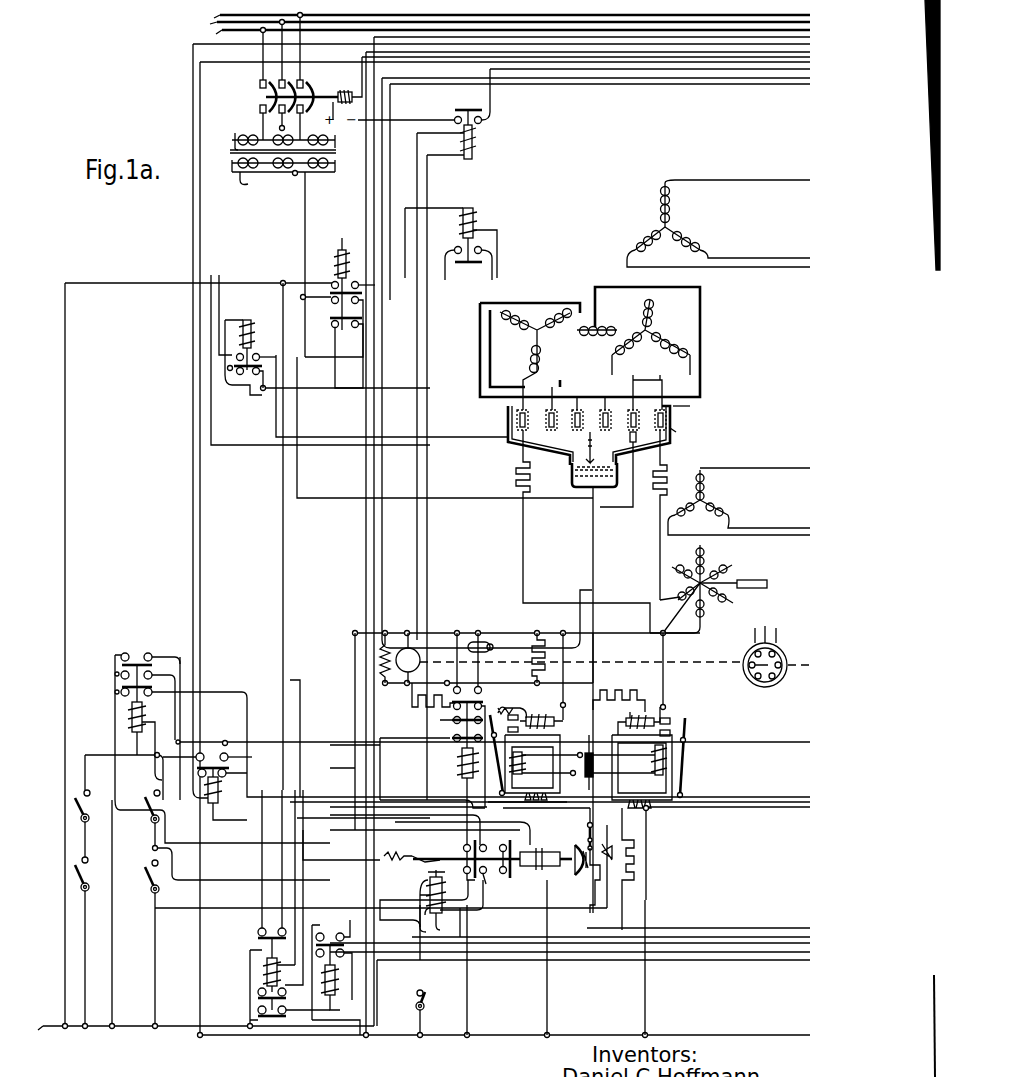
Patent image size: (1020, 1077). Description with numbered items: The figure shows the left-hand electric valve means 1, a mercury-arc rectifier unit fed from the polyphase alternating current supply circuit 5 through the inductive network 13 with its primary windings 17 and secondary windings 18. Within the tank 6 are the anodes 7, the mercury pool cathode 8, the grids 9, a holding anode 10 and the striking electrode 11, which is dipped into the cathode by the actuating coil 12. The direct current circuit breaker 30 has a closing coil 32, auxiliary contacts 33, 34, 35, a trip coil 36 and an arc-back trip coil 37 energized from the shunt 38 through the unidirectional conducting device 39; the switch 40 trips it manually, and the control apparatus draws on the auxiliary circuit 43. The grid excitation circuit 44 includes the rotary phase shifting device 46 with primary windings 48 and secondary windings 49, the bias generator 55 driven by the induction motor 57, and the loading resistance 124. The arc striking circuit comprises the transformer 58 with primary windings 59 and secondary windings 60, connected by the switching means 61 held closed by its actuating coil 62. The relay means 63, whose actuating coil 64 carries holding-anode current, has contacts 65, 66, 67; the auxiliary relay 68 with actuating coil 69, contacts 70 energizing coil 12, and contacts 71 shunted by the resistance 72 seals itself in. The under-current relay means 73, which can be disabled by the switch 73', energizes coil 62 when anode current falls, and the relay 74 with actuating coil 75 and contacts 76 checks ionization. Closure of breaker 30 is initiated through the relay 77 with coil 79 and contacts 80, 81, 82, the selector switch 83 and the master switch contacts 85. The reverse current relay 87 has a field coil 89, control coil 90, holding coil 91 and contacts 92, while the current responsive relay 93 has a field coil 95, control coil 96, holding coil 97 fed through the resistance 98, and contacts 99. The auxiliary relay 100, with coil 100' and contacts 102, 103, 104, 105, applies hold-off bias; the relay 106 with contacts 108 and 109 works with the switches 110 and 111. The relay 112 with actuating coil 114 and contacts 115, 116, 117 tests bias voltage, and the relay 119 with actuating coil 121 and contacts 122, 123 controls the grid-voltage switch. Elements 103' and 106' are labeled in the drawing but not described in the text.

The electric valve means 1 is at (698, 413).
The polyphase alternating current supply circuit 5 is at (506, 24).
The tank 6 is at (672, 448).
The anodes 7 is at (580, 412).
The mercury pool cathode 8 is at (603, 487).
The grids 9 is at (678, 433).
The holding anode 10 is at (636, 437).
The striking electrode 11 is at (594, 464).
The actuating coil 12 is at (594, 440).
The inductive network 13 is at (590, 342).
The primary windings 17 is at (657, 218).
The secondary windings 18 is at (548, 320).
The direct current circuit breaker 30 is at (486, 868).
The closing coil 32 is at (540, 850).
The auxiliary contacts 33 is at (463, 848).
The auxiliary contacts 34 is at (495, 883).
The auxiliary contacts 35 is at (507, 846).
The trip coil 36 is at (442, 893).
The additional trip coil 37 is at (437, 906).
The shunt 38 is at (586, 836).
The unidirectional conducting device 39 is at (612, 846).
The switch 40 is at (426, 998).
The auxiliary circuit 43 is at (417, 1036).
The grid excitation circuit 44 is at (734, 574).
The rotary phase shifting device 46 is at (696, 570).
The primary windings 48 is at (686, 506).
The secondary windings 49 is at (703, 619).
The direct current generator 55 is at (527, 658).
The alternating current induction motor 57 is at (765, 666).
The transformer 58 is at (230, 152).
The primary windings 59 is at (238, 133).
The secondary windings 60 is at (283, 257).
The switching means 61 is at (265, 98).
The actuating coil 62 is at (345, 90).
The relay means 63 is at (331, 290).
The actuating coil 64 is at (343, 248).
The contacts 65 is at (344, 281).
The contacts 66 is at (332, 342).
The contacts 67 is at (334, 337).
The auxiliary relay 68 is at (243, 343).
The actuating coil 69 is at (255, 330).
The contacts 70 is at (258, 354).
The contacts 71 is at (245, 377).
The resistance 72 is at (260, 389).
The relay means 73 is at (461, 455).
The switch 73' is at (487, 619).
The relay 74 is at (464, 243).
The actuating coil 75 is at (474, 212).
The contacts 76 is at (455, 248).
The relay 77 is at (132, 727).
The coil 79 is at (143, 722).
The contacts 80 is at (115, 693).
The contacts 81 is at (115, 676).
The contacts 82 is at (123, 655).
The selector switch 83 is at (147, 812).
The master switch contacts 85 is at (147, 880).
The reverse current relay 87 is at (579, 764).
The field coil 89 is at (527, 764).
The control coil 90 is at (542, 764).
The holding coil 91 is at (541, 713).
The contacts 92 is at (503, 713).
The current responsive relay 93 is at (691, 758).
The field coil 95 is at (650, 810).
The control coil 96 is at (651, 760).
The holding coil 97 is at (632, 715).
The resistance 98 is at (615, 690).
The contacts 99 is at (671, 718).
The auxiliary relay 100 is at (432, 773).
The coil 100' is at (451, 796).
The contacts 102 is at (454, 692).
The contacts 103 is at (492, 688).
The resistor 103' is at (432, 701).
The contacts 104 is at (453, 720).
The contacts 105 is at (453, 738).
The relay 106 is at (486, 748).
The relay coil 106' is at (197, 791).
The contacts 108 is at (230, 810).
The contacts 109 is at (253, 757).
The switch 110 is at (88, 796).
The switch 111 is at (88, 866).
The relay 112 is at (260, 908).
The actuating coil 114 is at (266, 962).
The contacts 115 is at (258, 932).
The contacts 116 is at (257, 992).
The contacts 117 is at (257, 1011).
The relay 119 is at (338, 963).
The actuating coil 121 is at (341, 990).
The contacts 122 is at (312, 925).
The contacts 123 is at (336, 1026).
The resistance 124 is at (532, 651).